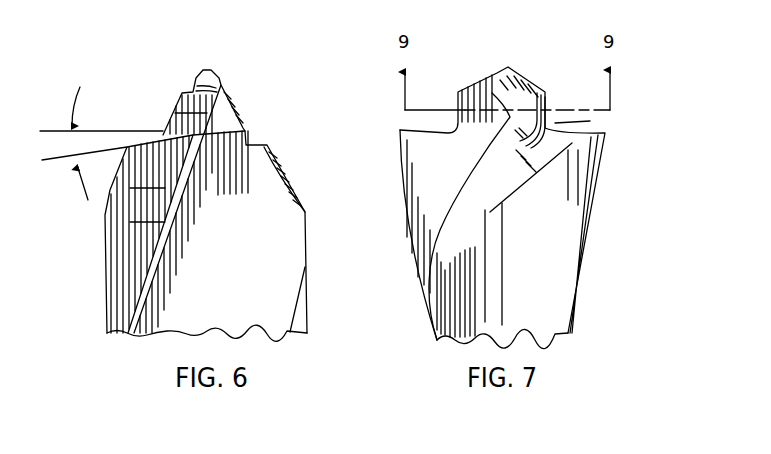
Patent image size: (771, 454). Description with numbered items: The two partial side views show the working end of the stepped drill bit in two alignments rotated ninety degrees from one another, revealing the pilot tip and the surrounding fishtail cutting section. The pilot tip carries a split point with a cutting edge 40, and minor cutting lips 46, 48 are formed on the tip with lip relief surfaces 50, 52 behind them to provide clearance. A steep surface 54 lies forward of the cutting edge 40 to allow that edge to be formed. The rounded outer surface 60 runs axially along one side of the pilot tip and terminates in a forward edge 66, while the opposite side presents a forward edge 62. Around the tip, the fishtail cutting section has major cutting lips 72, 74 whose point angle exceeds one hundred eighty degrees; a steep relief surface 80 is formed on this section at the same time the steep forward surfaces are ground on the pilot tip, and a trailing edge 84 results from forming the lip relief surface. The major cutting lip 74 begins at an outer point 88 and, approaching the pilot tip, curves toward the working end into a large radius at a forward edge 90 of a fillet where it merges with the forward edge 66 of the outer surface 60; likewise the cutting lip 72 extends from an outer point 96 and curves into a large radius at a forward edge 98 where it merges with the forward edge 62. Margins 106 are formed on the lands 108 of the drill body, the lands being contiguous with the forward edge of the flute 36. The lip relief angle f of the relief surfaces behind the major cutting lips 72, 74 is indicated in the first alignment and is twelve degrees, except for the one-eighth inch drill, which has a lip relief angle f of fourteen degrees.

In FIG. 6, the flute 36 is at (210, 252).
In FIG. 7, the flute 36 is at (458, 238).
In FIG. 6, the cutting edge 40 is at (212, 75).
In FIG. 7, the cutting edge 40 is at (492, 73).
In FIG. 6, the minor cutting lip 46 is at (222, 82).
In FIG. 7, the minor cutting lip 46 is at (472, 88).
In FIG. 7, the minor cutting lip 48 is at (522, 80).
In FIG. 6, the lip relief surface 50 is at (195, 88).
In FIG. 7, the lip relief surface 52 is at (536, 92).
In FIG. 6, the steep surface 54 is at (242, 125).
In FIG. 7, the steep surface 54 is at (440, 218).
In FIG. 6, the outer surface 60 is at (163, 113).
In FIG. 7, the forward edge 62 is at (546, 102).
In FIG. 7, the forward edge 66 is at (457, 106).
In FIG. 7, the major cutting lip 72 is at (592, 123).
In FIG. 7, the major cutting lip 74 is at (422, 132).
In FIG. 6, the steep relief surface 80 is at (283, 167).
In FIG. 7, the steep relief surface 80 is at (503, 178).
In FIG. 6, the trailing edge 84 is at (267, 147).
In FIG. 7, the trailing edge 84 is at (523, 140).
In FIG. 6, the outer point 88 is at (233, 131).
In FIG. 7, the outer point 88 is at (412, 130).
In FIG. 7, the forward edge 90 is at (450, 133).
In FIG. 7, the outer point 96 is at (602, 135).
In FIG. 7, the forward edge 98 is at (588, 121).
In FIG. 6, the margin 106 is at (122, 231).
In FIG. 7, the margin 106 is at (403, 192).
In FIG. 6, the land 108 is at (112, 197).
In FIG. 7, the land 108 is at (553, 285).
In FIG. 6, the lip relief angle f is at (84, 194).